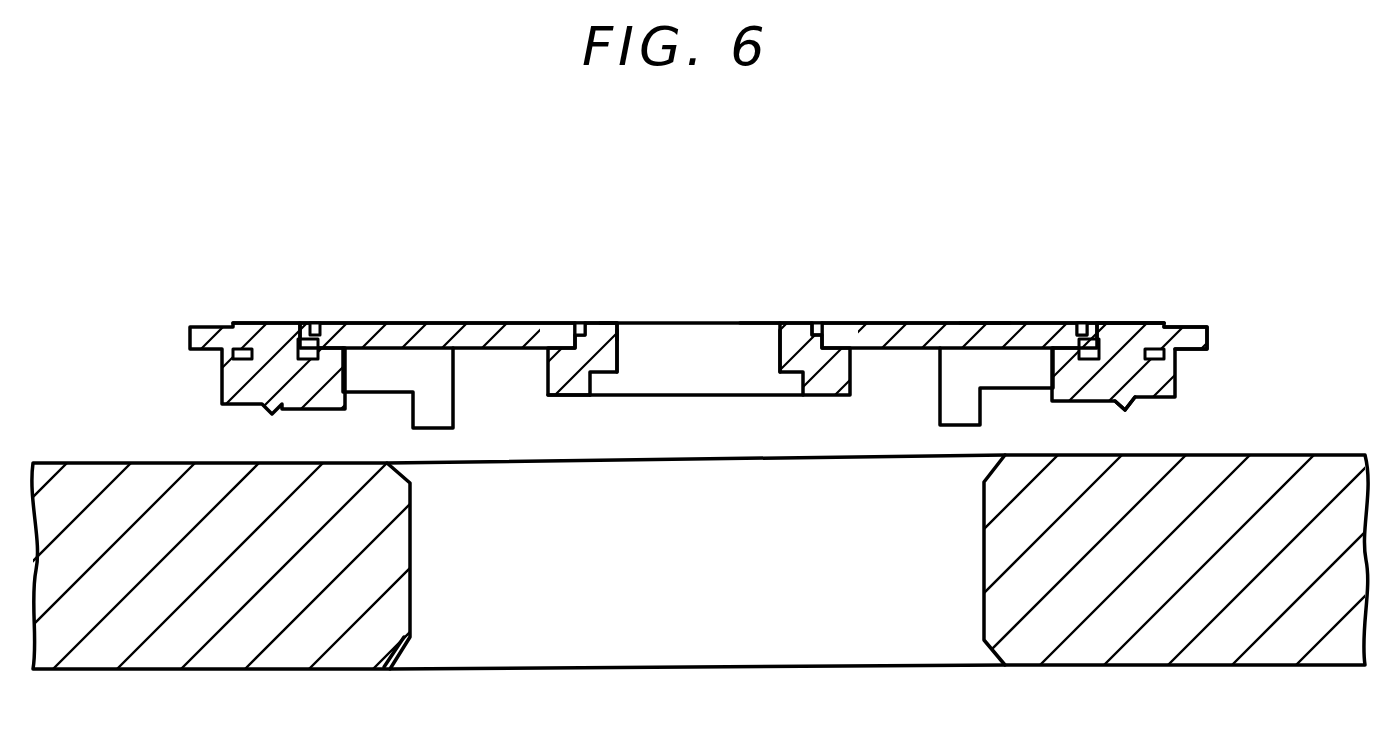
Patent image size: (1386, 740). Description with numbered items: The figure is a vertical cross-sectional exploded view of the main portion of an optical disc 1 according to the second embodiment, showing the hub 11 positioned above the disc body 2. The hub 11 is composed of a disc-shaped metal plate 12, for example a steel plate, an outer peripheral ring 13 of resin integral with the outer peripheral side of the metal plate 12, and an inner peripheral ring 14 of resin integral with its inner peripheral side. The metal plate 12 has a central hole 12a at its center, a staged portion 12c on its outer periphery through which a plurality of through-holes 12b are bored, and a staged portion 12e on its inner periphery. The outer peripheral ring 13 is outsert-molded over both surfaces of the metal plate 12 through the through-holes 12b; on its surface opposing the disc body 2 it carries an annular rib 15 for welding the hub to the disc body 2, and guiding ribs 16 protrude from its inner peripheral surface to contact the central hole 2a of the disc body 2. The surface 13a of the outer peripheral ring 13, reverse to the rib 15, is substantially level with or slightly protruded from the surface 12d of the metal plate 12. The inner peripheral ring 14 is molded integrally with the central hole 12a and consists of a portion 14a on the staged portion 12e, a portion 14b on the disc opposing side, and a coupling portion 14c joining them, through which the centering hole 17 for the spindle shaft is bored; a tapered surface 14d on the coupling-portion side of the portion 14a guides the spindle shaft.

The optical disc 1 is at (170, 330).
The disc body 2 is at (117, 482).
The central hole 2a is at (415, 617).
The hub 11 is at (403, 325).
The metal plate 12 is at (910, 322).
The central hole 12a is at (766, 333).
The through-holes 12b is at (1108, 322).
The staged portion 12c is at (1187, 322).
The surface 12d is at (985, 322).
The staged portion 12e is at (811, 322).
The outer peripheral ring 13 is at (1165, 378).
The surface 13a is at (1137, 325).
The inner peripheral ring 14 is at (831, 392).
The portion 14a is at (592, 322).
The portion 14b is at (573, 396).
The coupling portion 14c is at (770, 362).
The tapered surface 14d is at (623, 322).
The rib 15 is at (1130, 413).
The guiding ribs 16 is at (446, 415).
The centering hole 17 is at (638, 332).